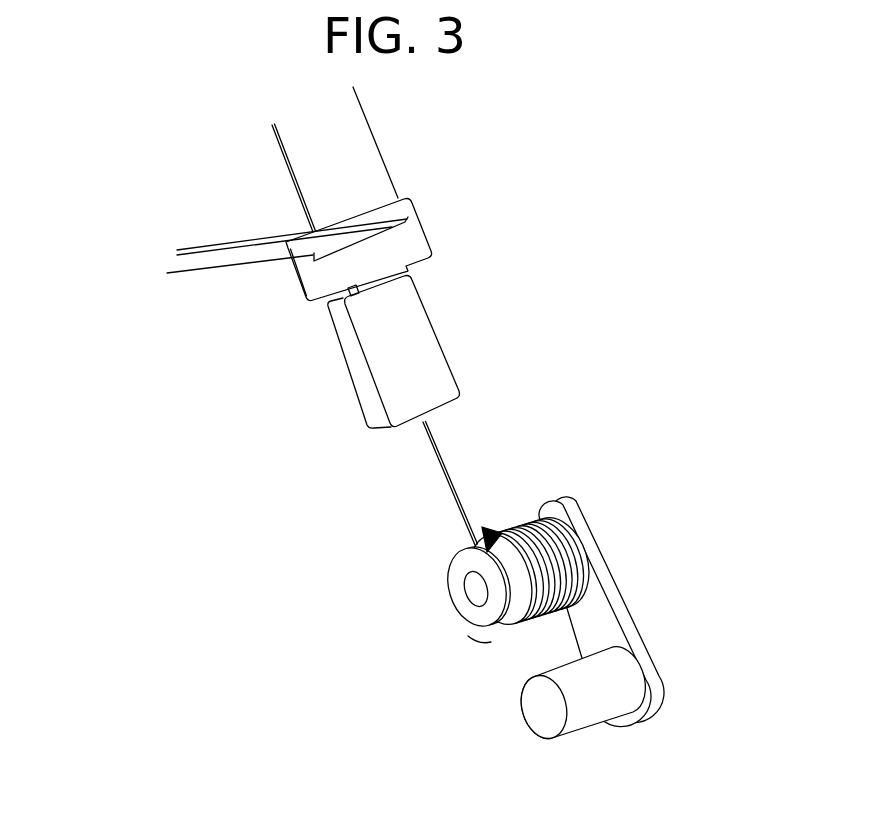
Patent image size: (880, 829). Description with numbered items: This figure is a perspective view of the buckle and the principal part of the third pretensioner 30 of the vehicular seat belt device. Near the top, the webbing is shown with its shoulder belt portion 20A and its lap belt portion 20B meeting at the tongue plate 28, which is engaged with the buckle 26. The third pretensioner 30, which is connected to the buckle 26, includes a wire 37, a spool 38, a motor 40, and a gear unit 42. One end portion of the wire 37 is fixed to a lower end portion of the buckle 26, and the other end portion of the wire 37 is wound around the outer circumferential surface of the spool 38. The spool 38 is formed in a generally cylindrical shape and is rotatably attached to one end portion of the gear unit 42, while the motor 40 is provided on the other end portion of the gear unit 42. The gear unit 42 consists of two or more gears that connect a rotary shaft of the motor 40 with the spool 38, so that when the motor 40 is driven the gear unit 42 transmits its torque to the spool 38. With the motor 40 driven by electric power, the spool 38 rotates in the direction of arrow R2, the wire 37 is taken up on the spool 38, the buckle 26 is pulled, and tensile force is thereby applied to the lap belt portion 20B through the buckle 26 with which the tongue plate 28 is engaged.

The shoulder belt portion 20A is at (380, 137).
The lap belt portion 20B is at (202, 248).
The tongue plate 28 is at (430, 237).
The buckle 26 is at (443, 352).
The wire 37 is at (449, 484).
The third pretensioner 30 is at (637, 612).
The spool 38 is at (450, 599).
The arrow R2 (spool rotation direction) R2 is at (490, 643).
The gear unit 42 is at (655, 652).
The motor 40 is at (527, 713).